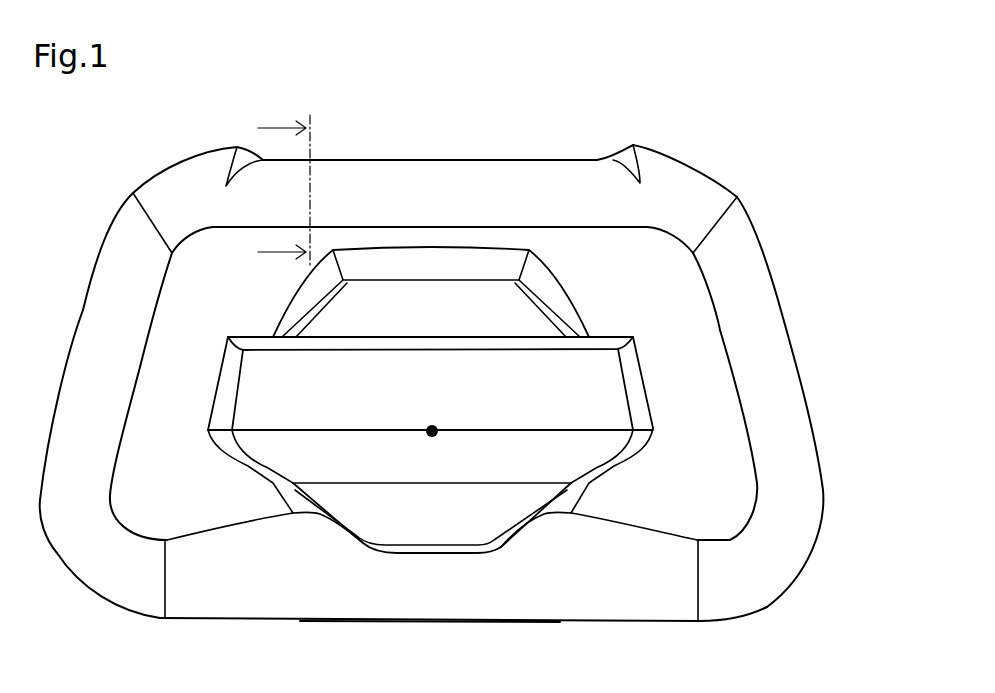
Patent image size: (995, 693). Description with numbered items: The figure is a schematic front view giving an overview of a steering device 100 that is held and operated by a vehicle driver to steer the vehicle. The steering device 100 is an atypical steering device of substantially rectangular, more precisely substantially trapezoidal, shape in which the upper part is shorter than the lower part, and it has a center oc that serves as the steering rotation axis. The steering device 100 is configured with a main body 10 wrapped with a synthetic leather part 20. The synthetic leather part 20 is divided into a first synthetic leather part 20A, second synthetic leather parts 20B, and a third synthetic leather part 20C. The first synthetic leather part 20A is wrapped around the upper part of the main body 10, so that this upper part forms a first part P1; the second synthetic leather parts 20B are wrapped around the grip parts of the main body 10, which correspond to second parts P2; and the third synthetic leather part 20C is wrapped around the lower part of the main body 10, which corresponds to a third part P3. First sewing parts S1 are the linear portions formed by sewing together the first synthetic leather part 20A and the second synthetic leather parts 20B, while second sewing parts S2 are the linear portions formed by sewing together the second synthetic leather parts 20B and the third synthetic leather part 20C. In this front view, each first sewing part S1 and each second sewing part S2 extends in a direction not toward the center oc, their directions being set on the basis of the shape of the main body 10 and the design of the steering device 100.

The steering device 100 is at (88, 174).
The main body 10 is at (347, 195).
The synthetic leather part 20 is at (447, 399).
The first synthetic leather part 20A is at (437, 176).
The second synthetic leather part 20B is at (753, 282).
The third synthetic leather part 20C is at (378, 614).
The first part P1 is at (699, 176).
The second part P2 is at (771, 326).
The third part P3 is at (498, 615).
The first sewing part S1 is at (729, 207).
The second sewing part S2 is at (703, 557).
The center oc is at (432, 430).